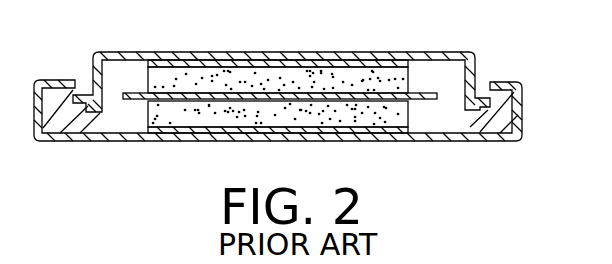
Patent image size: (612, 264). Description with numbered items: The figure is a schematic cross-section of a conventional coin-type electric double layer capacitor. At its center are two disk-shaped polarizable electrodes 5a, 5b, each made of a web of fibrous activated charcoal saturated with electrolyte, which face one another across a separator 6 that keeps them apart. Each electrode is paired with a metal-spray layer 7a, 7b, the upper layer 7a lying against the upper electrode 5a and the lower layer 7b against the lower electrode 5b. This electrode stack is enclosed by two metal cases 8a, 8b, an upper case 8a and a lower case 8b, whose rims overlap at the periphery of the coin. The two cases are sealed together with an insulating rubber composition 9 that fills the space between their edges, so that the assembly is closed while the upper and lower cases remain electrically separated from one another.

The polarizable electrode 5a is at (281, 74).
The polarizable electrode 5b is at (277, 118).
The separator 6 is at (130, 93).
The metal-spray layer 7a is at (328, 64).
The metal-spray layer 7b is at (362, 137).
The metal case 8a is at (474, 55).
The metal case 8b is at (520, 132).
The insulating rubber composition 9 is at (507, 111).